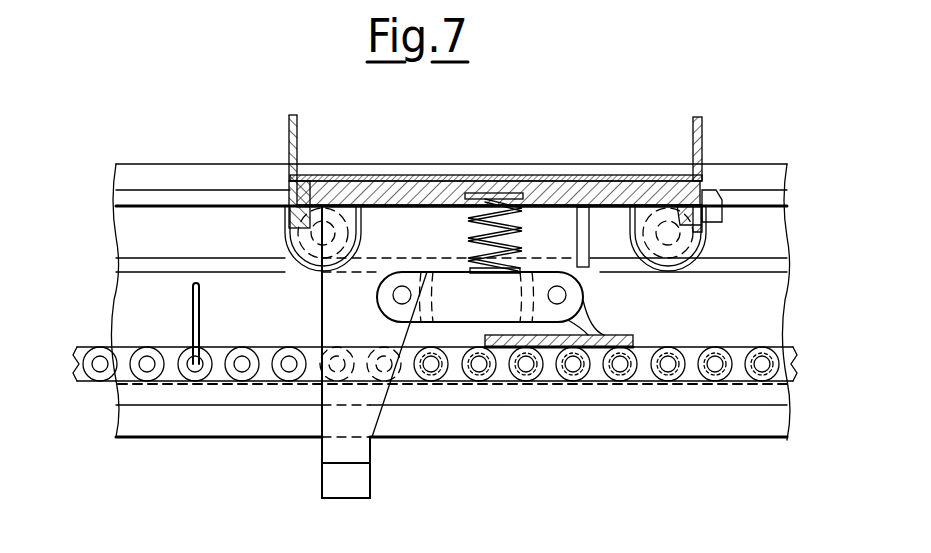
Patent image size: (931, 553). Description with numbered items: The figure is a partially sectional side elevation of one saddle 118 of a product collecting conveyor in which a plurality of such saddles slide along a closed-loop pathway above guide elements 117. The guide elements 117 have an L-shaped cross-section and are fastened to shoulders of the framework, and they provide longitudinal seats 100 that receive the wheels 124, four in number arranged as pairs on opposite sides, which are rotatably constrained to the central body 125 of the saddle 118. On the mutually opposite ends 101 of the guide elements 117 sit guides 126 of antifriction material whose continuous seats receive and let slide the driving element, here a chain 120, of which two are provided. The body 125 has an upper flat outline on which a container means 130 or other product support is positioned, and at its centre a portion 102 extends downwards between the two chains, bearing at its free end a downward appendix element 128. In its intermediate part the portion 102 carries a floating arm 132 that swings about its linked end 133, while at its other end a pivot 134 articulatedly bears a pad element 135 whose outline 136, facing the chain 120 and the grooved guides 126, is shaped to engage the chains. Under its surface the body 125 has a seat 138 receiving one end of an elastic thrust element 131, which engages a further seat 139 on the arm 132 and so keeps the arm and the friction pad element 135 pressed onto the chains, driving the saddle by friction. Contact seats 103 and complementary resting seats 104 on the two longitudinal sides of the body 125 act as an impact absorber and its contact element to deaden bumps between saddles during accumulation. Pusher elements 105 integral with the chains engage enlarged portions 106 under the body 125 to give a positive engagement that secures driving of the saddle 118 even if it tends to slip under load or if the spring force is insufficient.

The longitudinal seats 100 is at (135, 229).
The mutually opposite ends 101 is at (492, 428).
The portion 102 is at (333, 447).
The contact seats 103 is at (290, 192).
The complementary resting seats 104 is at (722, 200).
The pusher elements 105 is at (193, 313).
The enlarged portions 106 is at (592, 233).
The guide elements 117 is at (130, 291).
The saddle 118 is at (712, 190).
The chain 120 is at (698, 358).
The wheels 124 is at (290, 241).
The body 125 is at (355, 182).
The guides 126 is at (158, 400).
The appendix element 128 is at (362, 486).
The container means 130 is at (694, 118).
The elastic thrust element 131 is at (525, 227).
The floating arm 132 is at (447, 285).
The end 133 is at (398, 300).
The pivot 134 is at (566, 295).
The pad element 135 is at (622, 338).
The outline 136 is at (603, 332).
The seat 138 is at (486, 196).
The further seat 139 is at (527, 250).